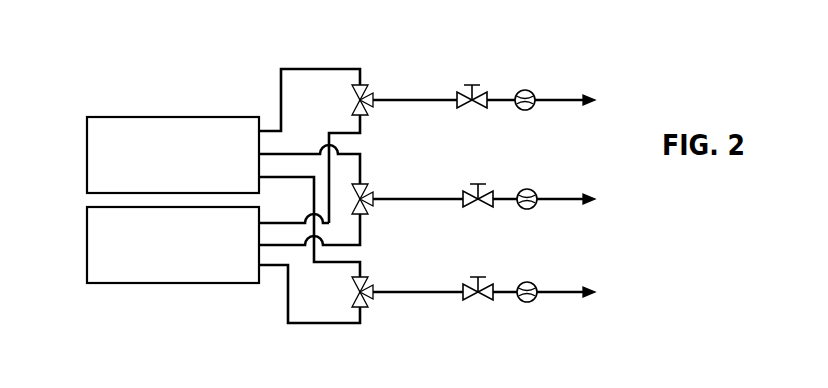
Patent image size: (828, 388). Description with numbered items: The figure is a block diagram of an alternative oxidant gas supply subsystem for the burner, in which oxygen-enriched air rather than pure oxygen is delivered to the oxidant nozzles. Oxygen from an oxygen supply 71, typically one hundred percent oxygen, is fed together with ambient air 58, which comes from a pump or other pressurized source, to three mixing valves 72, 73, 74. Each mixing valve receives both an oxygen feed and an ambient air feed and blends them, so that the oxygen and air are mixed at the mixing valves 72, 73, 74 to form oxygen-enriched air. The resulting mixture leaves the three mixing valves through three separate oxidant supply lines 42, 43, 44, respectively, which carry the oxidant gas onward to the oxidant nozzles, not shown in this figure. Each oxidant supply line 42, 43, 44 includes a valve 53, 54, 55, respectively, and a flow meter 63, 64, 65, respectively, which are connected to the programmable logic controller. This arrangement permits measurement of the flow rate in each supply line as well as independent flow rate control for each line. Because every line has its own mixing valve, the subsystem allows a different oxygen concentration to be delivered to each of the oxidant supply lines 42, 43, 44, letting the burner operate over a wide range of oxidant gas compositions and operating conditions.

The oxygen supply 71 is at (87, 127).
The ambient air 58 is at (149, 272).
The mixing valve 72 is at (372, 96).
The mixing valve 73 is at (373, 190).
The mixing valve 74 is at (373, 285).
The oxidant supply line 42 is at (422, 98).
The oxidant supply line 43 is at (423, 197).
The oxidant supply line 44 is at (423, 290).
The valve 53 is at (476, 84).
The valve 54 is at (483, 180).
The valve 55 is at (485, 275).
The flow meter 63 is at (526, 90).
The flow meter 64 is at (533, 192).
The flow meter 65 is at (533, 285).